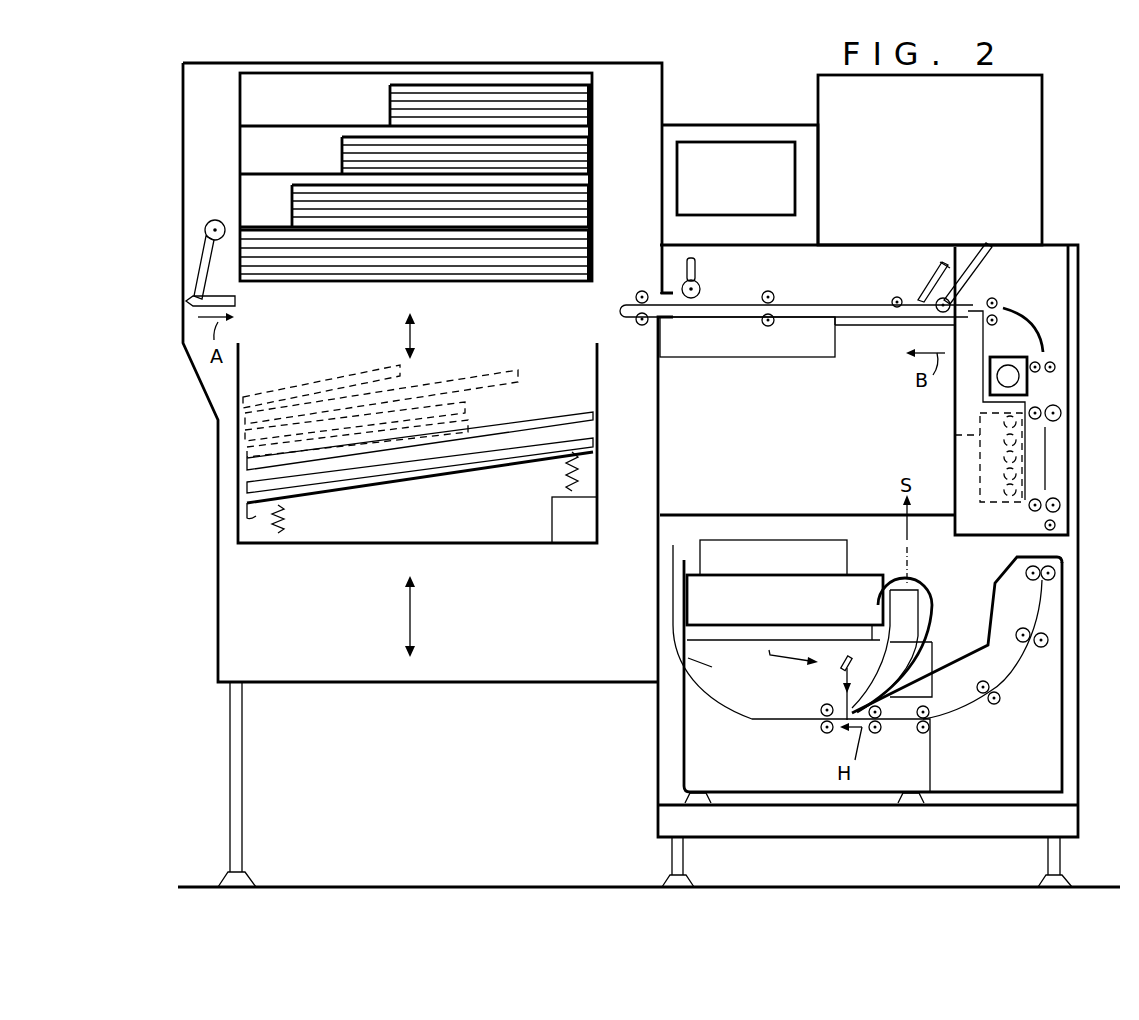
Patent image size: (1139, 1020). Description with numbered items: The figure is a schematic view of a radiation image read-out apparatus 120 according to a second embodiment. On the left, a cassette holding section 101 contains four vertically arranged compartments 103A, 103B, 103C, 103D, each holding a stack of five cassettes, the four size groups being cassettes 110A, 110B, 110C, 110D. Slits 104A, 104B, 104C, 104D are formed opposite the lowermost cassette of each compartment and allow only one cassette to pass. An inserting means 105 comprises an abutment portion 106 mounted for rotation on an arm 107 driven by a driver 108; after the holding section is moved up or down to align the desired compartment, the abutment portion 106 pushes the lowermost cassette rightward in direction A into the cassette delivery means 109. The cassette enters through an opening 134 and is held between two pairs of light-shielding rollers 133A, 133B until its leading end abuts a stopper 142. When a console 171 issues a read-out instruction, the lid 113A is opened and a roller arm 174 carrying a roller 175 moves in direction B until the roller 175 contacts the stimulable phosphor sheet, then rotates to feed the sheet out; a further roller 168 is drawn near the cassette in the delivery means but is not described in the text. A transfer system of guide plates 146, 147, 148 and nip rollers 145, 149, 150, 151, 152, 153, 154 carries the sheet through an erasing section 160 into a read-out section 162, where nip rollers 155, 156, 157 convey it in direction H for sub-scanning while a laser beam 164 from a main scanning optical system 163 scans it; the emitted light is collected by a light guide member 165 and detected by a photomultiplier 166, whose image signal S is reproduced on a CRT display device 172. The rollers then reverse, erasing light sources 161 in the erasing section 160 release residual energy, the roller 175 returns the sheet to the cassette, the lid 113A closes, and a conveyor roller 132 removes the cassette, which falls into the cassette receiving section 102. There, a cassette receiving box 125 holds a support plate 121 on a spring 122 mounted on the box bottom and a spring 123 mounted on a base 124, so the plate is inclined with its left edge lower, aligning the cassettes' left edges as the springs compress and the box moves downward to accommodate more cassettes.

The cassette holding section 101 is at (216, 124).
The cassette receiving section 102 is at (230, 430).
The compartment 103A is at (591, 253).
The compartment 103B is at (591, 203).
The compartment 103C is at (593, 147).
The compartment 103D is at (596, 92).
The slit 104A is at (590, 279).
The slit 104B is at (591, 228).
The slit 104C is at (591, 174).
The slit 104D is at (596, 124).
The inserting means 105 is at (190, 247).
The abutment portion 106 is at (200, 308).
The arm 107 is at (192, 279).
The driver 108 is at (212, 220).
The cassette delivery means 109 is at (848, 250).
The cassette 110A is at (275, 281).
The cassette 110B is at (335, 225).
The cassette 110C is at (342, 140).
The cassette 110D is at (390, 90).
The lid 113A is at (935, 280).
The radiation image read-out apparatus 120 is at (752, 72).
The support plate 121 is at (247, 520).
The spring 122 is at (290, 515).
The spring 123 is at (580, 470).
The base 124 is at (572, 530).
The cassette receiving box 125 is at (248, 468).
The conveyor roller 132 is at (699, 292).
The light-shielding rollers 133A is at (634, 318).
The light-shielding rollers 133B is at (783, 323).
The opening 134 is at (658, 320).
The stopper 142 is at (972, 325).
The nip rollers 145 is at (994, 297).
The guide plate 146 is at (1030, 320).
The guide plate 147 is at (1035, 605).
The guide plate 148 is at (748, 722).
The nip rollers 149 is at (1058, 366).
The nip rollers 150 is at (1062, 413).
The nip rollers 151 is at (1030, 508).
The nip rollers 152 is at (1024, 572).
The nip rollers 153 is at (1052, 645).
The nip rollers 154 is at (996, 705).
The nip rollers 155 is at (931, 729).
The nip rollers 156 is at (876, 735).
The nip rollers 157 is at (822, 736).
The erasing section 160 is at (970, 457).
The erasing light sources 161 is at (980, 435).
The read-out section 162 is at (818, 528).
The main scanning optical system 163 is at (796, 592).
The laser beam 164 is at (843, 680).
The light guide member 165 is at (918, 650).
The photomultiplier 166 is at (900, 580).
The roller 168 is at (893, 298).
The console 171 is at (1043, 150).
The CRT display device 172 is at (773, 155).
The roller arm 174 is at (983, 256).
The roller 175 is at (957, 264).